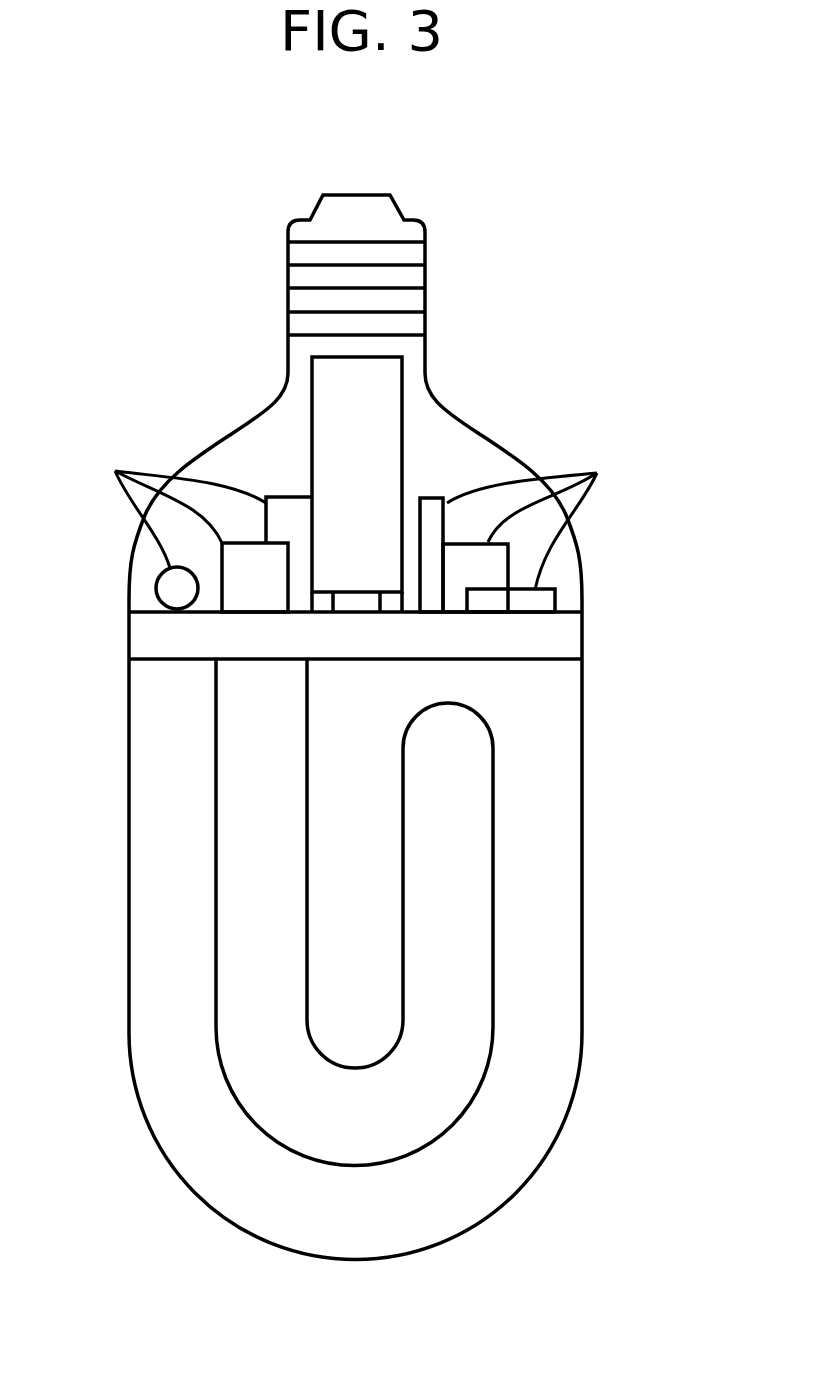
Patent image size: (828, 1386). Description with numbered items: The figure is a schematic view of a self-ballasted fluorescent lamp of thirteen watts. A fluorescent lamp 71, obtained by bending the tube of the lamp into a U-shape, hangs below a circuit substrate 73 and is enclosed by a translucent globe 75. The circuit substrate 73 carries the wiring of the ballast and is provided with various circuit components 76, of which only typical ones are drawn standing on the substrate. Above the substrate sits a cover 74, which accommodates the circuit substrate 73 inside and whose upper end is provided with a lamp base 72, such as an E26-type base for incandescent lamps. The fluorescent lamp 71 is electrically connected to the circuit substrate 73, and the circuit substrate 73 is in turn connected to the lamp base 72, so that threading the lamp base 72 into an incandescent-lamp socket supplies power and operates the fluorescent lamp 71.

The fluorescent lamp 71 is at (493, 892).
The lamp base 72 is at (427, 252).
The circuit substrate 73 is at (567, 607).
The cover 74 is at (506, 450).
The translucent globe 75 is at (582, 985).
The circuit components 76 is at (355, 511).